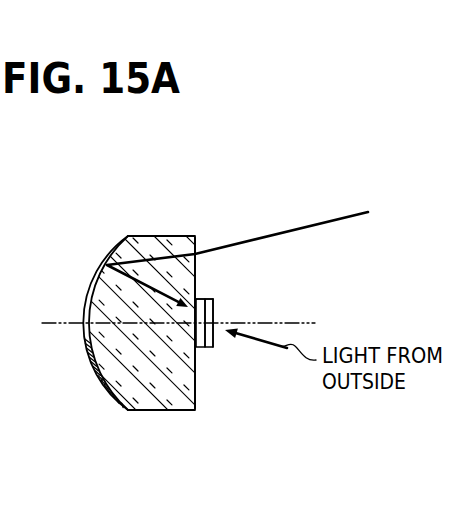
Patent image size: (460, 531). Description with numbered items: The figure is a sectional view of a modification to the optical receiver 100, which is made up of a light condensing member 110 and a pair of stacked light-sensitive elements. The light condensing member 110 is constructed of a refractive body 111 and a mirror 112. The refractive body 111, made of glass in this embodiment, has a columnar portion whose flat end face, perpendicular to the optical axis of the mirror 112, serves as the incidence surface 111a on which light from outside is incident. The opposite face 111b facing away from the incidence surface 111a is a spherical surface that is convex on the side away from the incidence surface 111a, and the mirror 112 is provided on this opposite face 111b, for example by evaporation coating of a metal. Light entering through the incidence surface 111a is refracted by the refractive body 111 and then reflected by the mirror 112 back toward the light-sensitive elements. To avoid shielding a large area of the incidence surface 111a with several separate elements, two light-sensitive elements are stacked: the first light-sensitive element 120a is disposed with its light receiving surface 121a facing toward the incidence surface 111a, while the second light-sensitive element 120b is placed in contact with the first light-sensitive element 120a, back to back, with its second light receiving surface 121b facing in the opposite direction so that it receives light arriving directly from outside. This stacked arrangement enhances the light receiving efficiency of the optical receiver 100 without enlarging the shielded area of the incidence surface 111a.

The optical receiver 100 is at (218, 228).
The light condensing member 110 is at (188, 186).
The refractive body 111 is at (158, 236).
The incidence surface 111a is at (195, 411).
The opposite face 111b is at (92, 336).
The mirror 112 is at (124, 234).
The first light-sensitive element 120a is at (202, 352).
The second light-sensitive element 120b is at (218, 352).
The light receiving surface 121a is at (198, 299).
The second light receiving surface 121b is at (215, 311).